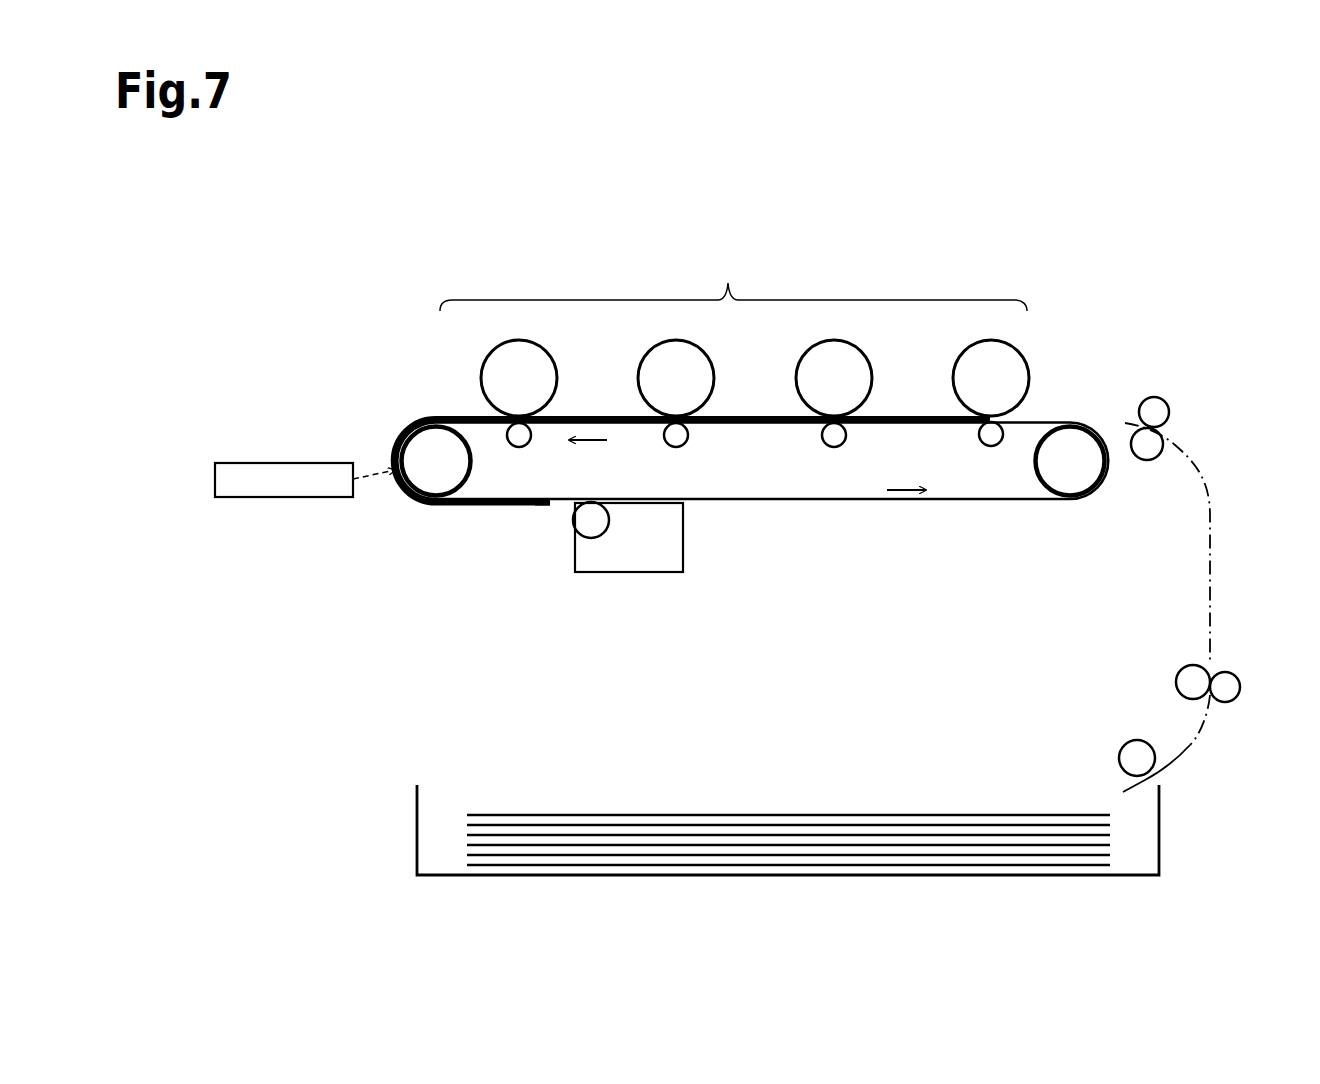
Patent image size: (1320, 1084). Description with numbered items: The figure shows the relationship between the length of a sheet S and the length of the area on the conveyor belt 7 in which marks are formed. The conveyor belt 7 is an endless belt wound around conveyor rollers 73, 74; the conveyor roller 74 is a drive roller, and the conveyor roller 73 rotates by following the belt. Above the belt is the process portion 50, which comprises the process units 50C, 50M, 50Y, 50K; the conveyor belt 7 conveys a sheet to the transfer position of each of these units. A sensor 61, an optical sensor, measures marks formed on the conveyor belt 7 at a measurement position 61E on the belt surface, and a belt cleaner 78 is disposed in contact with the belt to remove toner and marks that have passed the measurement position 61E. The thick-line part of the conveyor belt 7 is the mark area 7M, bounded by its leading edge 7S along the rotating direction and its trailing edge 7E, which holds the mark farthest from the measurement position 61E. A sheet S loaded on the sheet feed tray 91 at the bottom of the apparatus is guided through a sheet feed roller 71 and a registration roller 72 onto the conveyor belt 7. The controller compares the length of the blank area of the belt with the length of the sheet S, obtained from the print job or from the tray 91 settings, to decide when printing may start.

The conveyor belt 7 is at (758, 498).
The mark area 7M is at (762, 417).
The trailing edge of mark area 7E is at (993, 414).
The leading edge of mark area 7S is at (548, 509).
The conveyor roller 73 is at (1035, 462).
The conveyor roller 74 is at (477, 468).
The process portion 50 is at (733, 282).
The process unit 50C is at (493, 347).
The process unit 50M is at (650, 347).
The process unit 50Y is at (808, 347).
The process unit 50K is at (965, 347).
The sensor 61 is at (298, 463).
The measurement position 61E is at (398, 460).
The belt cleaner 78 is at (632, 572).
The registration roller 72 is at (1153, 407).
The sheet S is at (1210, 563).
The sheet feed roller 71 is at (1130, 754).
The sheet feed tray 91 is at (965, 876).